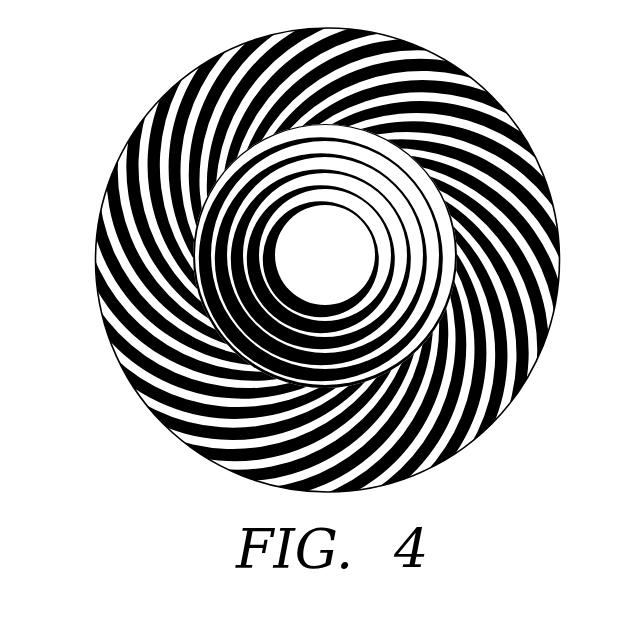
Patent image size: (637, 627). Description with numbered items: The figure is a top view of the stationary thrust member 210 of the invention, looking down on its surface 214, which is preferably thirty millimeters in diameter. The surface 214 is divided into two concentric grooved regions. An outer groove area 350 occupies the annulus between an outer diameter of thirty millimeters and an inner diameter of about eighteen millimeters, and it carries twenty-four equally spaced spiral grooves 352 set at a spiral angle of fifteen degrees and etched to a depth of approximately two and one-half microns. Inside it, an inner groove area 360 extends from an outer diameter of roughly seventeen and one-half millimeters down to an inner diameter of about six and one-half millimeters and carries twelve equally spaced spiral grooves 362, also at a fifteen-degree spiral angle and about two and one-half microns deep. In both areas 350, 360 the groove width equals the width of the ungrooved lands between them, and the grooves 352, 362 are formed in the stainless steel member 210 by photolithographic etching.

The stationary thrust member 210 is at (306, 271).
The surface 214 is at (311, 271).
The outer groove area 350 is at (311, 271).
The spiral grooves 352 is at (96, 300).
The inner groove area 360 is at (285, 202).
The spiral grooves 362 is at (285, 222).